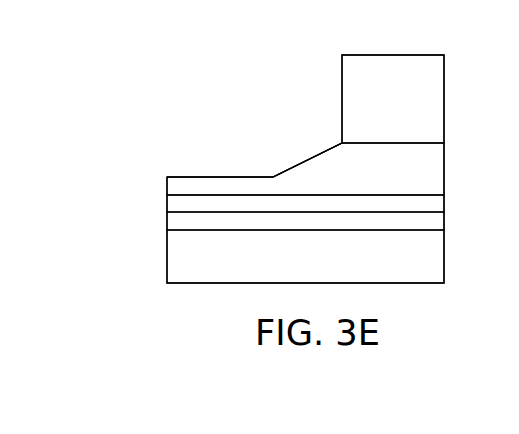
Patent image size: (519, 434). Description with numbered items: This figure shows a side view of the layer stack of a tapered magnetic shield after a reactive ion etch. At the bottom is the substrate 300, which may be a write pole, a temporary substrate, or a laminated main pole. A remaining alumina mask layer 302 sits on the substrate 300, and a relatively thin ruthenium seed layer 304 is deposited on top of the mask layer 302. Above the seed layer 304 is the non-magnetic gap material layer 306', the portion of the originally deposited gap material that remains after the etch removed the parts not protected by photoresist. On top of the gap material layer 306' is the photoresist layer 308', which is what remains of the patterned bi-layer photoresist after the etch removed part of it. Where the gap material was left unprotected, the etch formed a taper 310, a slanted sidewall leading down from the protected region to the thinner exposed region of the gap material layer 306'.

The substrate 300 is at (185, 257).
The alumina mask layer 302 is at (182, 220).
The ruthenium seed layer 304 is at (177, 203).
The non-magnetic gap material layer 306' is at (341, 169).
The photoresist layer 308' is at (428, 87).
The taper 310 is at (305, 150).